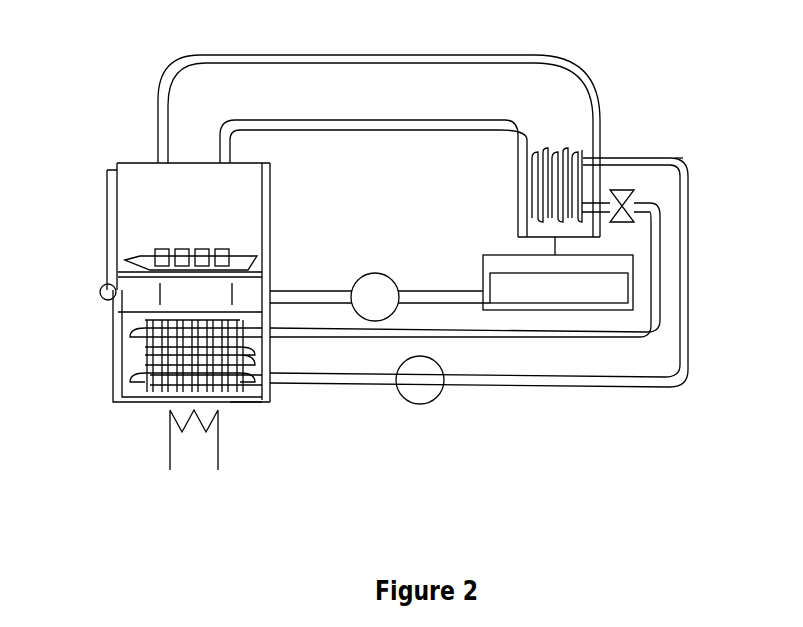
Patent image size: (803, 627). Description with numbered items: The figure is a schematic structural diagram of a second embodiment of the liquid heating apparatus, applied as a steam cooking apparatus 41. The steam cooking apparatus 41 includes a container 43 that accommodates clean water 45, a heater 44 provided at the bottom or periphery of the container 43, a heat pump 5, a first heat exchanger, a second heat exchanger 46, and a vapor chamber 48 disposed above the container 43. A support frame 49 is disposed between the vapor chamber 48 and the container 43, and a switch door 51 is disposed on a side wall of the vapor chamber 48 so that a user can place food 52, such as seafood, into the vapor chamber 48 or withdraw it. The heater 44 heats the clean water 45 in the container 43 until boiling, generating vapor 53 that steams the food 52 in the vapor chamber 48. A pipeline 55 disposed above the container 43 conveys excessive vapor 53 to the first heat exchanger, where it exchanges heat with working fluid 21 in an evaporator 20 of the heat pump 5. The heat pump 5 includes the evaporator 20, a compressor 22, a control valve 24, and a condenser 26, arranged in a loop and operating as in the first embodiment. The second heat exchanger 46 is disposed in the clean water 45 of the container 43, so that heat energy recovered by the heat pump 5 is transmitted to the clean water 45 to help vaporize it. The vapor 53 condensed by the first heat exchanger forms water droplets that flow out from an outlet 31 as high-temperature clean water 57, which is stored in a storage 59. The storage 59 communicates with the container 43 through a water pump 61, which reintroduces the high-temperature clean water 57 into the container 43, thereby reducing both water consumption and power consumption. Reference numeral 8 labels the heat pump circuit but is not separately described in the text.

The heat pump 5 is at (568, 147).
The refrigerant circuit 8 is at (684, 158).
The evaporator 20 is at (623, 193).
The working fluid 21 is at (628, 160).
The compressor 22 is at (430, 401).
The control valve 24 is at (465, 270).
The condenser 26 is at (245, 403).
The outlet 31 is at (516, 245).
The steam cooking apparatus 41 is at (615, 80).
The container 43 is at (113, 388).
The heater 44 is at (168, 433).
The clean water 45 is at (130, 322).
The second heat exchanger 46 is at (130, 351).
The vapor chamber 48 is at (112, 263).
The support frame 49 is at (262, 253).
The switch door 51 is at (108, 229).
The food 52 is at (216, 250).
The vapor 53 is at (370, 93).
The pipeline 55 is at (537, 57).
The high-temperature clean water 57 is at (586, 292).
The storage 59 is at (617, 311).
The water pump 61 is at (376, 281).